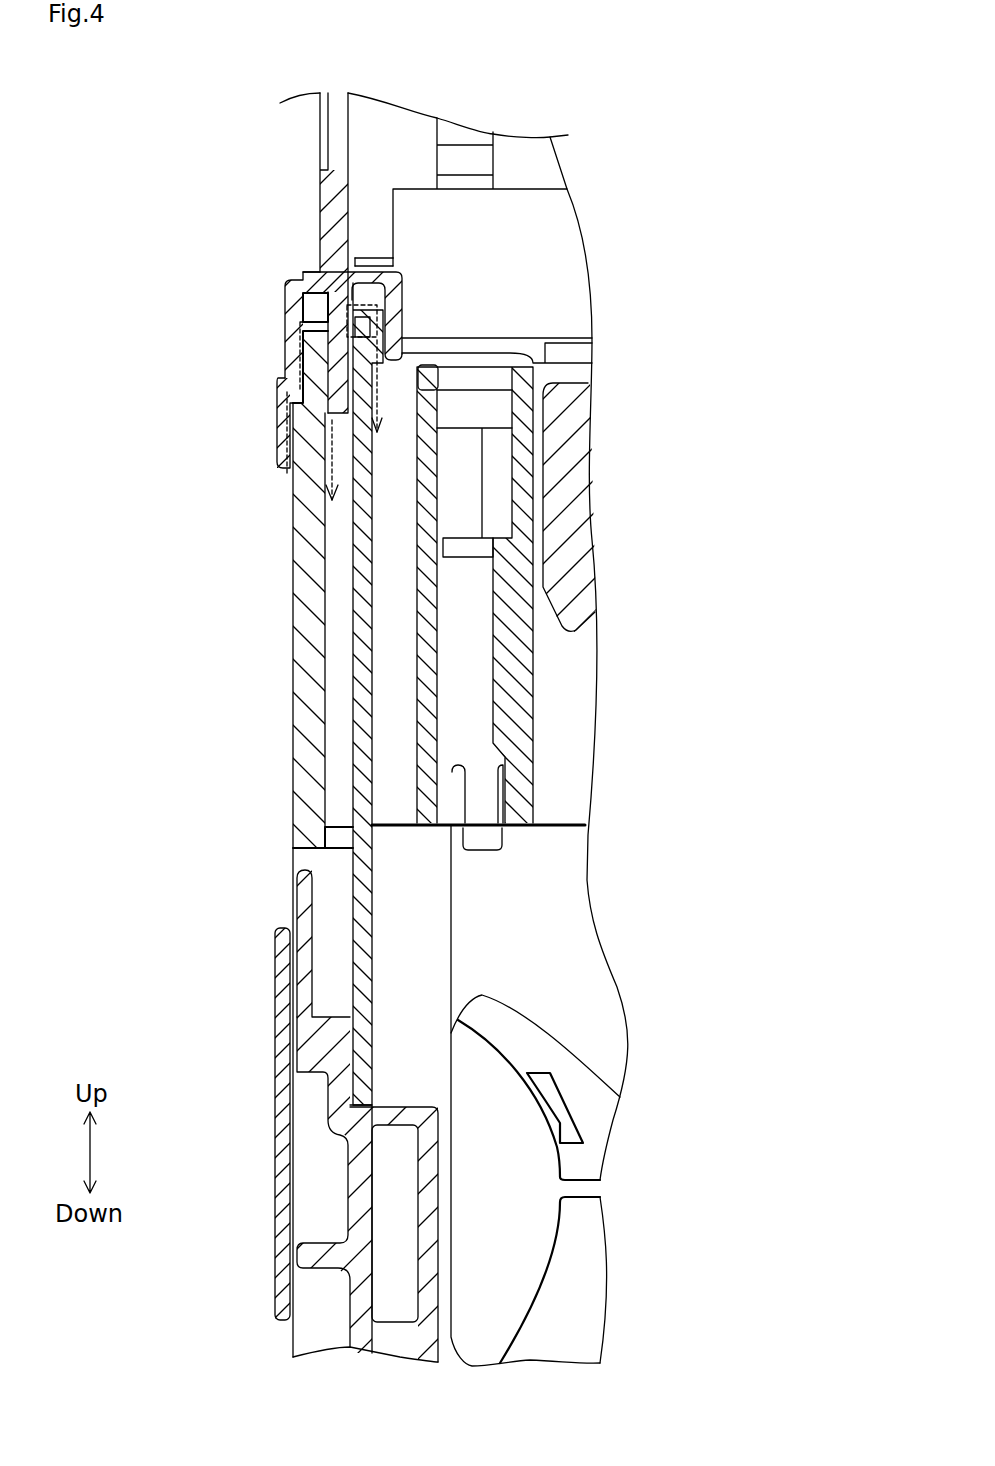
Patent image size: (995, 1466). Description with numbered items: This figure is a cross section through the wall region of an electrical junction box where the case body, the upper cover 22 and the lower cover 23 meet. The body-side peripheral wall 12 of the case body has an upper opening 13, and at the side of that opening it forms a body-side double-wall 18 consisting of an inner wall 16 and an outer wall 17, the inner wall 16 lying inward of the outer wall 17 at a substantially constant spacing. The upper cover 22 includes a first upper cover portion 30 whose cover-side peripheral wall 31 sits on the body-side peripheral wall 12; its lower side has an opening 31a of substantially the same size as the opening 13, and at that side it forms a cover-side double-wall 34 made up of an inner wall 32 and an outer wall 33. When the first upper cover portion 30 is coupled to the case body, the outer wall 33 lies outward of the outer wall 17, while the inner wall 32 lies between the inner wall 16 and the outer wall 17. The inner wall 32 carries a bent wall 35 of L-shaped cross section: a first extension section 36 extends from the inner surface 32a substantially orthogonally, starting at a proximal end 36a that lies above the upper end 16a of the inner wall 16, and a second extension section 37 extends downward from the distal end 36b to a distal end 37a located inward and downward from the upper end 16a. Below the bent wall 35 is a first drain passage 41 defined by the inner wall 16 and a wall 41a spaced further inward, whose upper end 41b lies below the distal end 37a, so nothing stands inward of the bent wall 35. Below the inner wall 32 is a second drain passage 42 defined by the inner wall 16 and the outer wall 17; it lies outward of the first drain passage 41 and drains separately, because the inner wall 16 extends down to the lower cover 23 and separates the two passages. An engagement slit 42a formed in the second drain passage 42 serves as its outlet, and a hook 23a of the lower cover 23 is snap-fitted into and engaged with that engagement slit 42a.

The body-side peripheral wall 12 is at (289, 702).
The opening 13 is at (391, 444).
The inner wall 16 is at (353, 588).
The upper end 16a is at (373, 312).
The outer wall 17 is at (289, 637).
The body-side double-wall 18 is at (235, 595).
The upper cover 22 is at (270, 182).
The lower cover 23 is at (300, 1058).
The hook 23a is at (302, 912).
The first upper cover portion 30 is at (319, 177).
The cover-side peripheral wall 31 is at (316, 200).
The opening 31a is at (328, 280).
The inner wall 32 is at (300, 304).
The inner surface 32a is at (353, 192).
The outer wall 33 is at (292, 336).
The cover-side double-wall 34 is at (218, 293).
The bent wall 35 is at (397, 268).
The first extension section 36 is at (385, 265).
The proximal end 36a is at (356, 262).
The distal end 36b is at (385, 254).
The second extension section 37 is at (402, 292).
The distal end 37a is at (438, 378).
The first drain passage 41 is at (395, 575).
The wall 41a is at (430, 455).
The upper end 41b is at (473, 337).
The second drain passage 42 is at (340, 528).
The engagement slit 42a is at (300, 852).